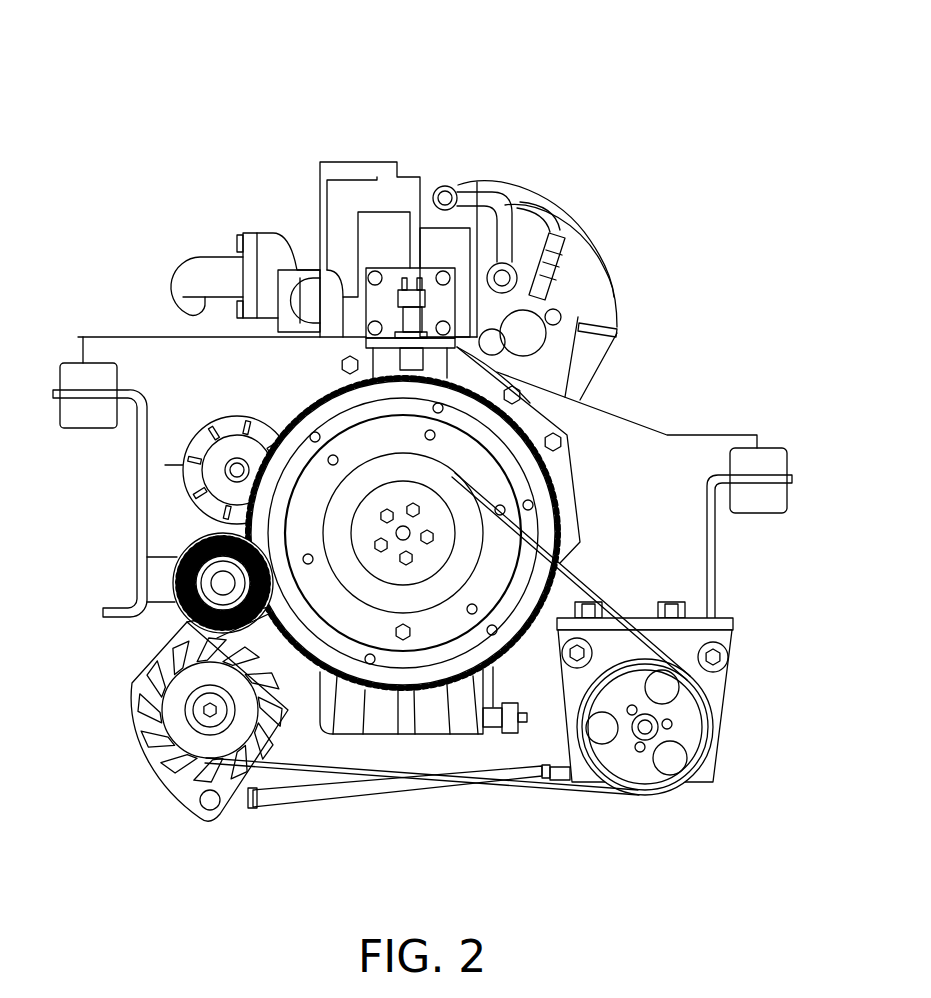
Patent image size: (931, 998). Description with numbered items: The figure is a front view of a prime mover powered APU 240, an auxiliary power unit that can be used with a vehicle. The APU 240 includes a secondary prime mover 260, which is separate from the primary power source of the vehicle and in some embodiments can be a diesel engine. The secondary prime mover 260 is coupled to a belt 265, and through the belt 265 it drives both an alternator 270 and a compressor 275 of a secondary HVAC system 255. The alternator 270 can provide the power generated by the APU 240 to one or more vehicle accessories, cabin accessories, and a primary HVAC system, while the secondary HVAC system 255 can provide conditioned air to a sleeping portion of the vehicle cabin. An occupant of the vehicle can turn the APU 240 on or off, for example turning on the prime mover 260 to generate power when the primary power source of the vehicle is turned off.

The prime mover powered APU 240 is at (731, 66).
The secondary HVAC system 255 is at (752, 672).
The secondary prime mover 260 is at (617, 413).
The belt 265 is at (602, 600).
The alternator 270 is at (132, 699).
The compressor 275 is at (693, 723).